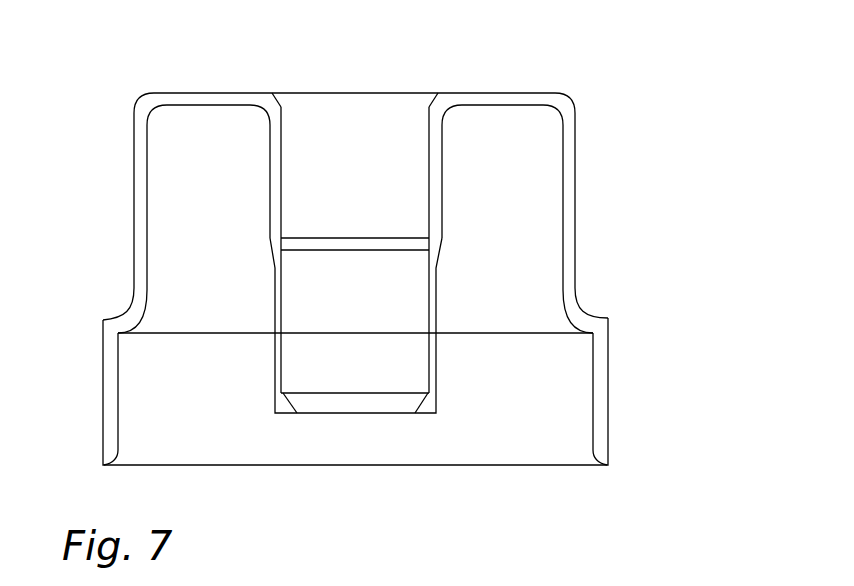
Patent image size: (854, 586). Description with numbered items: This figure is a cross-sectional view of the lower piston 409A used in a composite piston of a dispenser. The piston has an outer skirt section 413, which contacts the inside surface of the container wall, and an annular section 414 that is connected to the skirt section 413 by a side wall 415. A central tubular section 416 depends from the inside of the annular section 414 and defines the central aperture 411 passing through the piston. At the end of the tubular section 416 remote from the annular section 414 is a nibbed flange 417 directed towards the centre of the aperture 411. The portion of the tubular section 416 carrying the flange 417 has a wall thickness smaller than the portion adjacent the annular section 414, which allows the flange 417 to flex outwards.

The semiconductor device structure 409A is at (628, 241).
The central aperture 411 is at (375, 170).
The skirt section 413 is at (602, 408).
The annular section 414 is at (485, 93).
The side wall 415 is at (568, 188).
The central tubular section 416 is at (281, 210).
The nibbed flange 417 is at (305, 413).